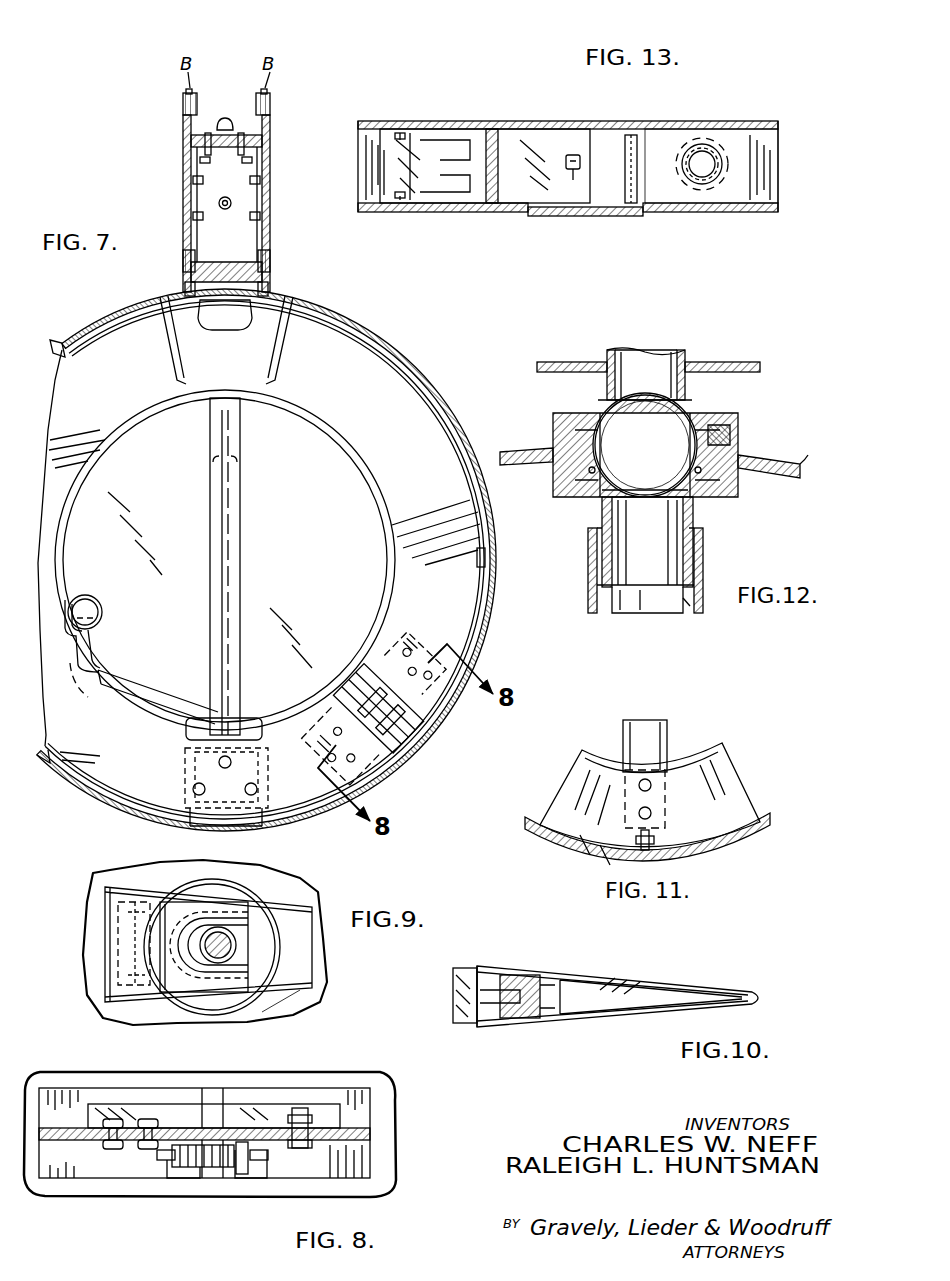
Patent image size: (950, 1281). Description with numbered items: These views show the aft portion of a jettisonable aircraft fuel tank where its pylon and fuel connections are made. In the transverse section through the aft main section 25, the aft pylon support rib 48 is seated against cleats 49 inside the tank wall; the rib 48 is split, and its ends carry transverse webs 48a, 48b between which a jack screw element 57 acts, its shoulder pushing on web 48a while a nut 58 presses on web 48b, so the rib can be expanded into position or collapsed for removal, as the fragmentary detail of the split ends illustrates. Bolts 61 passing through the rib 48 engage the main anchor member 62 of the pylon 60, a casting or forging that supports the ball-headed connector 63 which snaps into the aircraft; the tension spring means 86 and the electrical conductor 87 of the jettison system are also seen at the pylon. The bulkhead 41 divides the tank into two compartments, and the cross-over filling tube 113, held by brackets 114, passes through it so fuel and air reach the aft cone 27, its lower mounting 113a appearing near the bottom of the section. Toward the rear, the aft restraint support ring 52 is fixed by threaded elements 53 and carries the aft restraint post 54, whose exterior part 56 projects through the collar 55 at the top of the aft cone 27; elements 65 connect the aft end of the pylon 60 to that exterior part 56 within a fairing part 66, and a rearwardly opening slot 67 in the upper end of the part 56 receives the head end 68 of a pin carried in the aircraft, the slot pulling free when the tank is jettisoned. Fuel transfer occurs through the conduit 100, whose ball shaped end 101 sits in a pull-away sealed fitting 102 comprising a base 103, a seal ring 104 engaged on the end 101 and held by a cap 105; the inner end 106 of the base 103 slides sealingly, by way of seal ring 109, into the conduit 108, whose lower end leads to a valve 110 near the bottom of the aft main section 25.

In FIG. 7, the aft main section 25 is at (372, 322).
In FIG. 12, the aft main section 25 is at (790, 478).
In FIG. 8, the aft main section 25 is at (356, 1073).
In FIG. 11, the aft cone 27 is at (568, 846).
In FIG. 9, the aft cone 27 is at (322, 984).
In FIG. 7, the internal bulkhead member 41 is at (320, 505).
In FIG. 7, the aft pylon support rib 48 is at (425, 396).
In FIG. 8, the aft pylon support rib 48 is at (372, 1141).
In FIG. 7, the transverse web 48a is at (332, 712).
In FIG. 8, the transverse web 48a is at (170, 1180).
In FIG. 7, the transverse web 48b is at (400, 660).
In FIG. 8, the transverse web 48b is at (256, 1180).
In FIG. 7, the cleats 49 is at (477, 562).
In FIG. 11, the aft restraint support ring 52 is at (732, 786).
In FIG. 11, the threaded elements 53 is at (662, 842).
In FIG. 11, the aft restraint post 54 is at (645, 720).
In FIG. 9, the collar 55 is at (208, 1012).
In FIG. 9, the exterior part 56 is at (188, 983).
In FIG. 10, the exterior part 56 is at (520, 1025).
In FIG. 7, the jack screw element 57 is at (392, 766).
In FIG. 8, the jack screw element 57 is at (205, 1168).
In FIG. 7, the nut 58 is at (420, 736).
In FIG. 8, the nut 58 is at (240, 1175).
In FIG. 7, the pylon 60 is at (182, 150).
In FIG. 13, the pylon 60 is at (412, 120).
In FIG. 12, the pylon 60 is at (748, 362).
In FIG. 9, the pylon 60 is at (125, 1007).
In FIG. 10, the pylon 60 is at (465, 966).
In FIG. 7, the bolts 61 is at (232, 322).
In FIG. 7, the main anchor member 62 is at (182, 263).
In FIG. 13, the main anchor member 62 is at (490, 180).
In FIG. 7, the ball-headed connector 63 is at (225, 118).
In FIG. 10, the elements 65 is at (470, 1022).
In FIG. 9, the fairing part 66 is at (290, 995).
In FIG. 10, the fairing part 66 is at (635, 978).
In FIG. 9, the rearwardly opening slot 67 is at (250, 924).
In FIG. 9, the head end 68 is at (232, 948).
In FIG. 13, the tension spring means 86 is at (585, 175).
In FIG. 7, the conductor 87 is at (218, 204).
In FIG. 13, the conduit 100 is at (700, 186).
In FIG. 12, the conduit 100 is at (655, 350).
In FIG. 12, the ball shaped end 101 is at (700, 410).
In FIG. 13, the pull-away sealed fitting 102 is at (730, 160).
In FIG. 12, the pull-away sealed fitting 102 is at (588, 505).
In FIG. 12, the base 103 is at (706, 505).
In FIG. 12, the seal ring 104 is at (738, 448).
In FIG. 13, the cap 105 is at (712, 145).
In FIG. 12, the cap 105 is at (566, 416).
In FIG. 12, the inner end 106 is at (648, 588).
In FIG. 7, the conduit 108 is at (238, 567).
In FIG. 12, the conduit 108 is at (700, 610).
In FIG. 12, the seal ring 109 is at (708, 568).
In FIG. 7, the valve 110 is at (252, 720).
In FIG. 7, the cross-over filling tube 113 is at (140, 690).
In FIG. 7, the arm mounting plate 113a is at (198, 806).
In FIG. 7, the brackets 114 is at (108, 648).